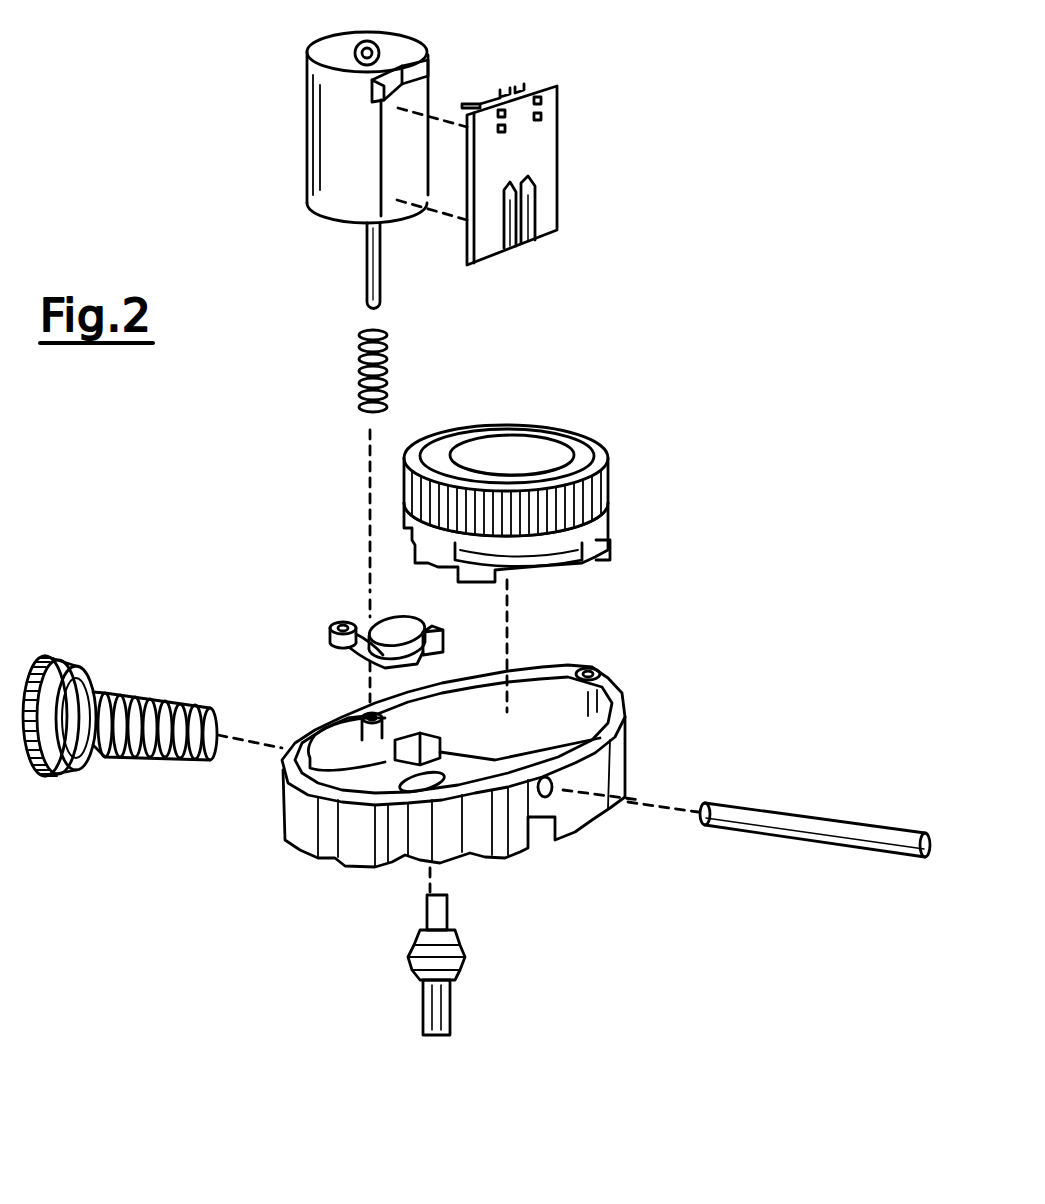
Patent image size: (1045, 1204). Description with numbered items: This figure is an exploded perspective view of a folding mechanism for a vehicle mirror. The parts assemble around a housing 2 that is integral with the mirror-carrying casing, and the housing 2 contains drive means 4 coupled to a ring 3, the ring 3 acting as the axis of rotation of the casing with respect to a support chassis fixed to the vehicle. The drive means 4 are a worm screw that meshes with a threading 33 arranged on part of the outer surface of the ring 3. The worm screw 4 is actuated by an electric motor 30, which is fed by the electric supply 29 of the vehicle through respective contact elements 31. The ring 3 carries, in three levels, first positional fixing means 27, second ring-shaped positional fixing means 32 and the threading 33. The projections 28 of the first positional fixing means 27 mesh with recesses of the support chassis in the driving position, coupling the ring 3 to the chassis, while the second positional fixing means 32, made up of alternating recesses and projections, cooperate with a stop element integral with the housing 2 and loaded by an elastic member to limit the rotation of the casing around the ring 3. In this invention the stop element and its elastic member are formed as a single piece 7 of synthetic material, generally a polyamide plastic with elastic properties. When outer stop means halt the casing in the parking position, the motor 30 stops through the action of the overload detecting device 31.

The housing 2 is at (628, 725).
The ring 3 is at (632, 467).
The drive means 4 is at (120, 693).
The single piece 7 is at (325, 600).
The first positional fixing means 27 is at (612, 554).
The projections 28 is at (600, 560).
The electric supply 29 is at (460, 955).
The electric motor 30 is at (307, 147).
The contact elements 31 is at (557, 193).
The second positional fixing means 32 is at (610, 532).
The threading 33 is at (610, 477).